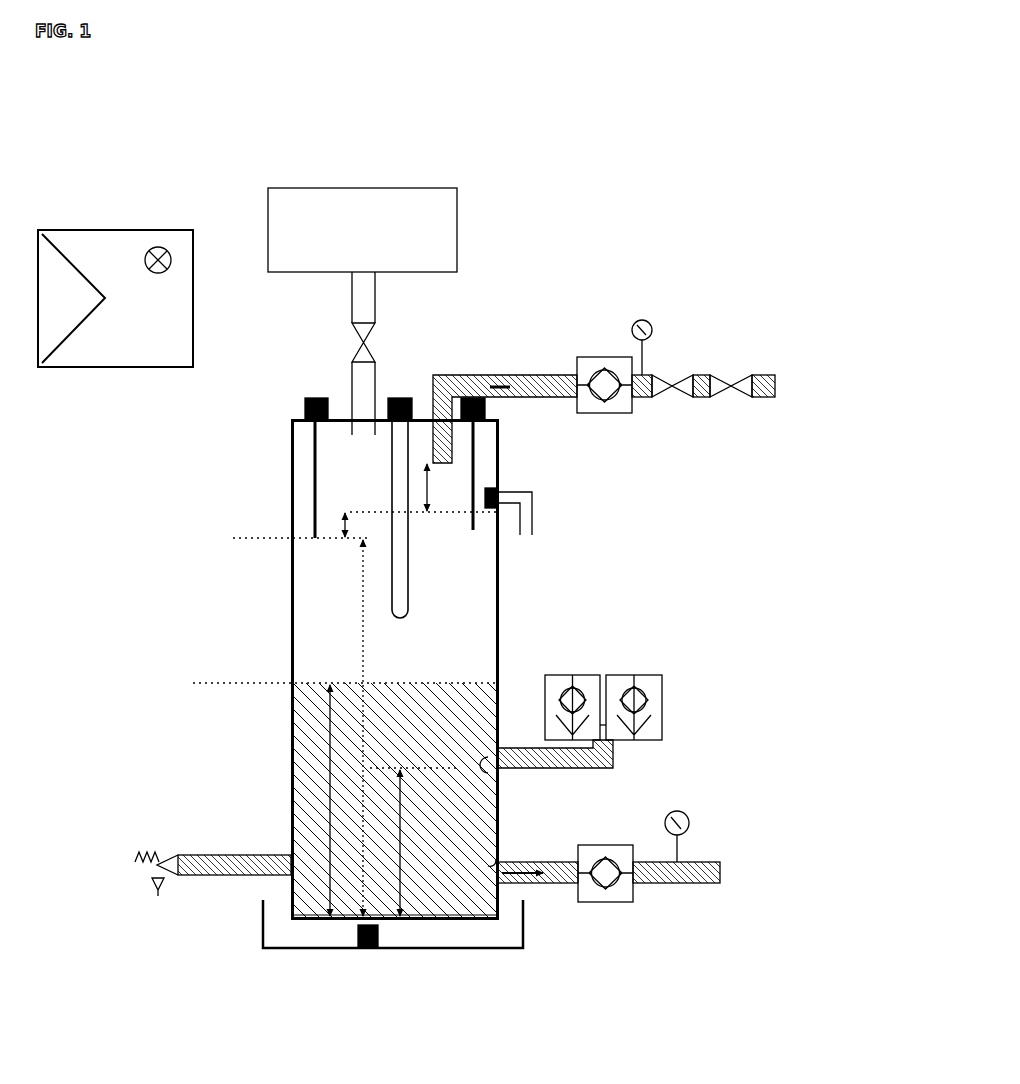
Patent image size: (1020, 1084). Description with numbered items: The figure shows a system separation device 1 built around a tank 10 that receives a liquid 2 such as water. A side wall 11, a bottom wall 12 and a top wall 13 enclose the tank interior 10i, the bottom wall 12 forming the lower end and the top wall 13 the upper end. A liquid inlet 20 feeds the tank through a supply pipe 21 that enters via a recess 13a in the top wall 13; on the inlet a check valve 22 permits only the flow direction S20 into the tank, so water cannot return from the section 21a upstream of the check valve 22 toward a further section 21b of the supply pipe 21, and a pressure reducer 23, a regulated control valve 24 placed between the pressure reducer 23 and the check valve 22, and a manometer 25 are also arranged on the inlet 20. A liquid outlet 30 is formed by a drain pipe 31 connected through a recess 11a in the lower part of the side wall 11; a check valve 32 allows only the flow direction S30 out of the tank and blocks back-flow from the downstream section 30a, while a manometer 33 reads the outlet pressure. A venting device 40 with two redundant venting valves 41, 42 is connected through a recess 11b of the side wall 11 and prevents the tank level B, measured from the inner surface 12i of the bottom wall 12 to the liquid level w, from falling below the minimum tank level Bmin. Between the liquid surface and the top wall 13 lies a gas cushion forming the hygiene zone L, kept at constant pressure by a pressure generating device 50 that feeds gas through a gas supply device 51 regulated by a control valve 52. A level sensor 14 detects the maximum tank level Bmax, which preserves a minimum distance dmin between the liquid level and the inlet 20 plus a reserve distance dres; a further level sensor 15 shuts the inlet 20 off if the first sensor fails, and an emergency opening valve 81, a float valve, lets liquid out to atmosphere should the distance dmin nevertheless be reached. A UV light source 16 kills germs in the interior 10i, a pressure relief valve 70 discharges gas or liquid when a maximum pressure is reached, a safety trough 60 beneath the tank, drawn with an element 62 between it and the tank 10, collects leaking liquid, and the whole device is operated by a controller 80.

The system separation device 1 is at (675, 175).
The liquid 2 is at (437, 373).
The tank 10 is at (384, 658).
The tank interior 10i is at (445, 608).
The side wall 11 is at (497, 565).
The recess of the side wall 11a is at (500, 862).
The recess of the side wall 11b is at (497, 770).
The bottom wall 12 is at (452, 918).
The inner surface of the bottom wall 12i is at (308, 912).
The top wall 13 is at (342, 418).
The recess in the top wall 13a is at (430, 418).
The level sensor 14 is at (315, 482).
The further level sensor 15 is at (473, 475).
The UV light source 16 is at (398, 495).
The liquid inlet 20 is at (593, 359).
The supply pipe 21 is at (518, 400).
The section of the supply pipe 21a is at (545, 395).
The gas pipe section 21b is at (766, 397).
The check valve 22 is at (590, 357).
The pressure reducer 23 is at (752, 375).
The regulated control valve 24 is at (683, 375).
The manometer 25 is at (640, 320).
The liquid outlet 30 is at (612, 899).
The section of the outlet 30a is at (700, 883).
The drain pipe 31 is at (542, 885).
The check valve 32 is at (605, 845).
The manometer 33 is at (688, 815).
The venting device 40 is at (619, 716).
The venting valve 41 is at (572, 675).
The venting valve 42 is at (634, 675).
The pressure generating device 50 is at (460, 228).
The gas supply device 51 is at (352, 292).
The controllable control valve 52 is at (352, 332).
The safety trough 60 is at (290, 948).
The support 62 is at (370, 948).
The pressure relief valve 70 is at (155, 868).
The controller 80 is at (105, 228).
The emergency opening valve 81 is at (532, 515).
The flow direction S20 is at (508, 388).
The flow direction S30 is at (518, 885).
The hygiene zone L is at (423, 655).
The liquid level w is at (295, 680).
The tank level B is at (328, 797).
The maximum tank level Bmax is at (363, 620).
The minimum tank level Bmin is at (403, 833).
The reserve distance dres is at (345, 523).
The minimum distance dmin is at (423, 509).